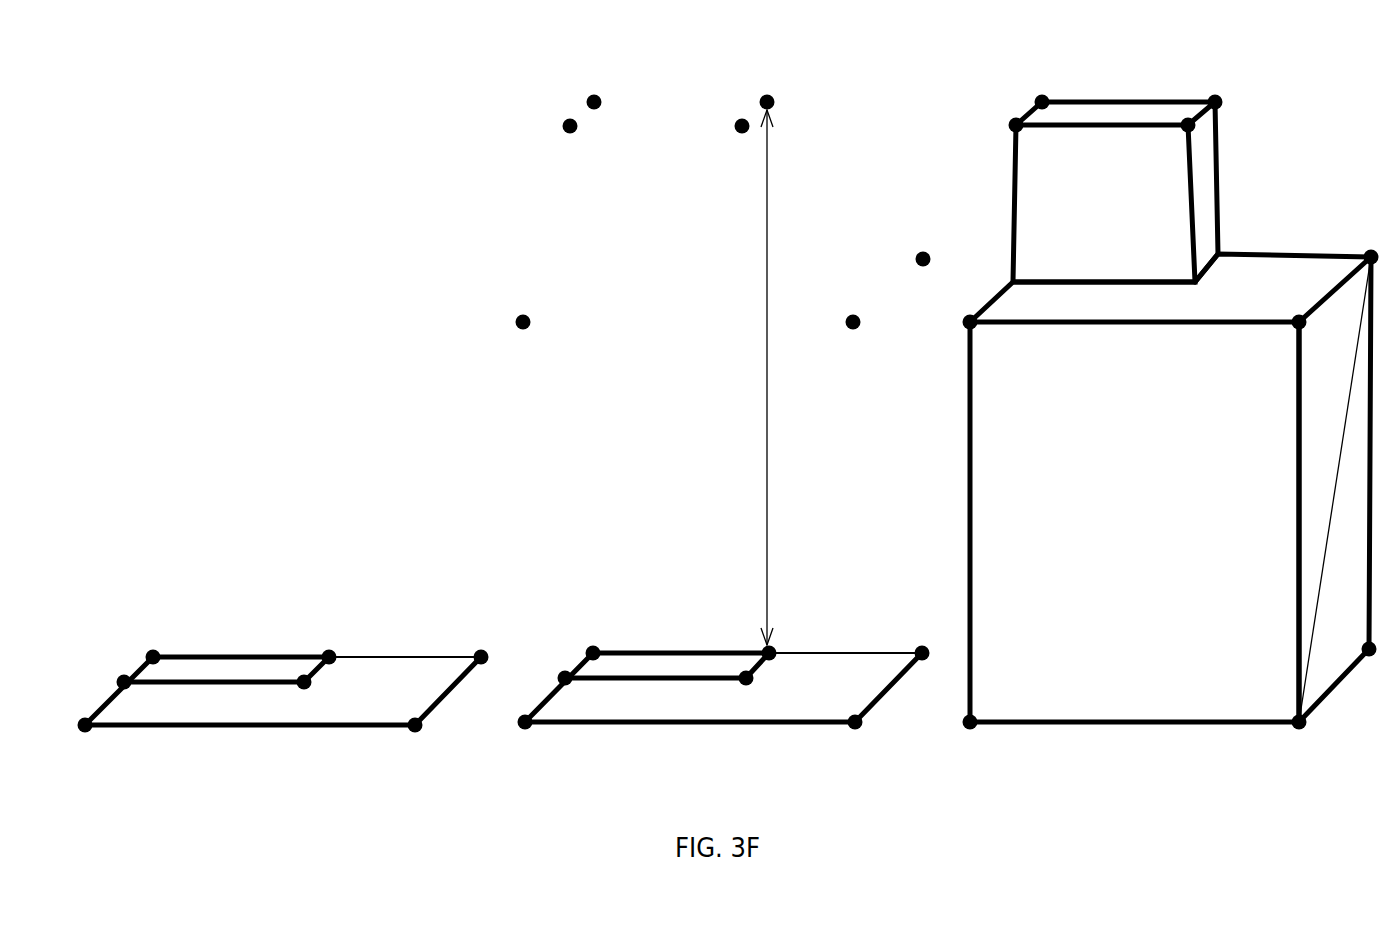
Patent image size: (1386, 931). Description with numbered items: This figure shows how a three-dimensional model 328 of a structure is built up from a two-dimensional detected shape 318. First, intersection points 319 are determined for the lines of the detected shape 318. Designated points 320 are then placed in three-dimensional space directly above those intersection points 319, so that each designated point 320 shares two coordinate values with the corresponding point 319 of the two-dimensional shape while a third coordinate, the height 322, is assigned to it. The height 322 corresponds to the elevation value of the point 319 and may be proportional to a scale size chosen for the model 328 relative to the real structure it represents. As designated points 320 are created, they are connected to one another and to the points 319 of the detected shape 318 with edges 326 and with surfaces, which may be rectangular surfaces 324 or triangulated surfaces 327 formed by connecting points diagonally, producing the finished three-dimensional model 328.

The detected shape 318 is at (253, 728).
The intersection points 319 is at (327, 652).
The designated points 320 is at (767, 95).
The height 322 is at (767, 273).
The rectangular surfaces 324 is at (1127, 638).
The edges 326 is at (1299, 556).
The triangulated surfaces 327 is at (1314, 392).
The 3D model 328 is at (1236, 239).